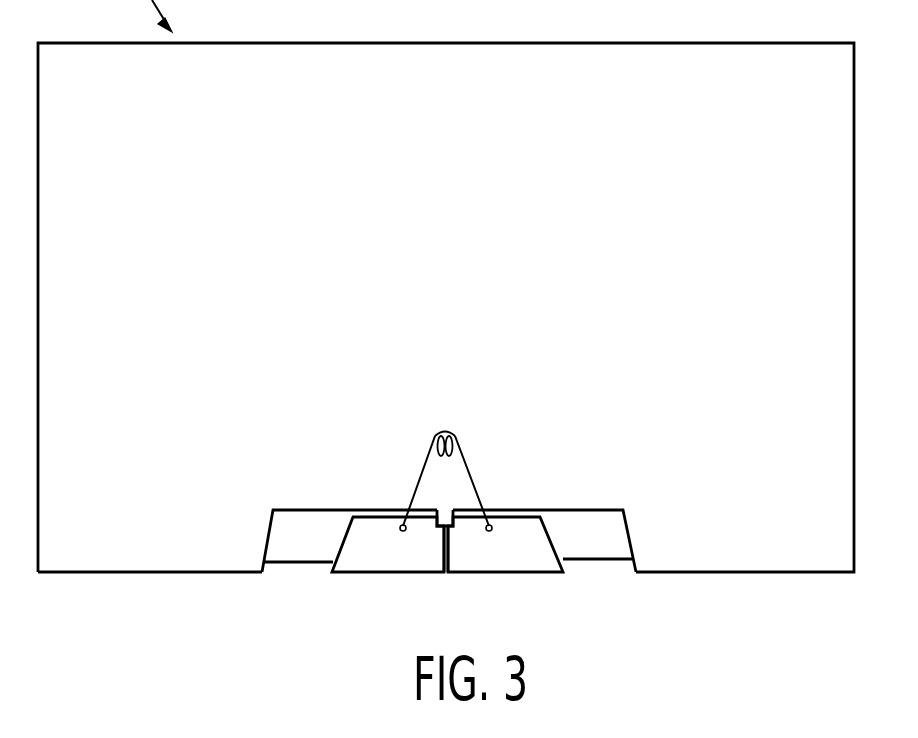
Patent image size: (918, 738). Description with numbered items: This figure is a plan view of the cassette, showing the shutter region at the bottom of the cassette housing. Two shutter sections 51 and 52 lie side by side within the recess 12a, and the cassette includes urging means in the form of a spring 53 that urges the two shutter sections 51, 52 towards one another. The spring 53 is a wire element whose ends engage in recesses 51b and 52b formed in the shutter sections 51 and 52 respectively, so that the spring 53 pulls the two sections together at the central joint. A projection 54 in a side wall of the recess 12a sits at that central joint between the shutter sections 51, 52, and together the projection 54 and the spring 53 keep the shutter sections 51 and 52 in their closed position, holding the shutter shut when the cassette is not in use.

The recess 12a is at (602, 528).
The shutter section 51 is at (541, 576).
The shutter section 52 is at (358, 576).
The spring 53 is at (456, 437).
The projection 54 is at (445, 518).
The recess 51b is at (495, 522).
The recess 52b is at (397, 522).